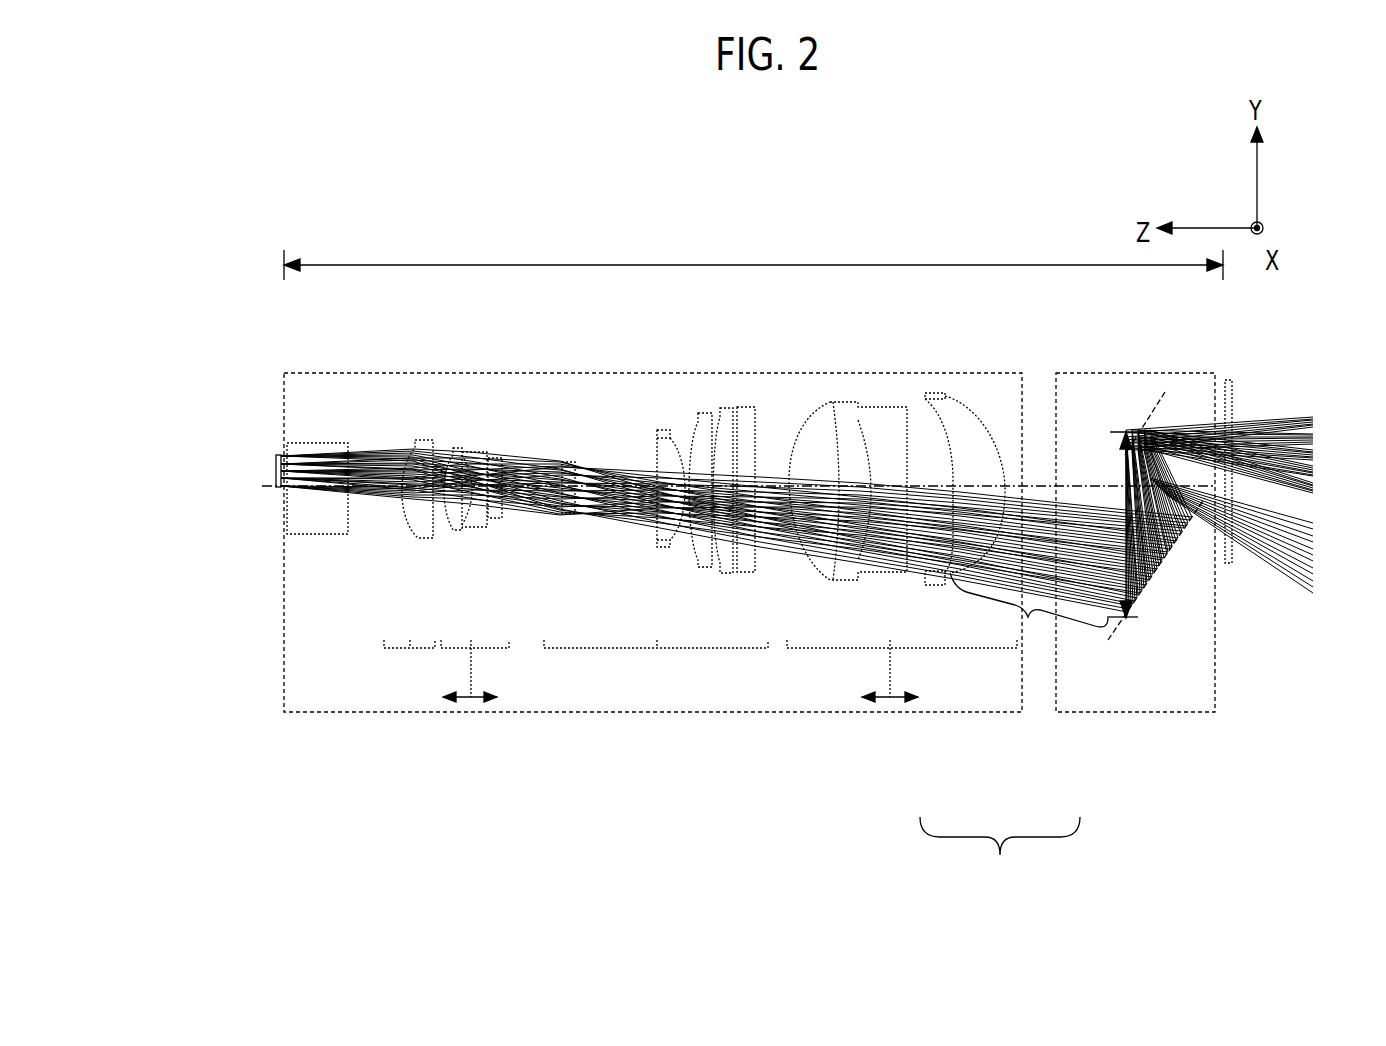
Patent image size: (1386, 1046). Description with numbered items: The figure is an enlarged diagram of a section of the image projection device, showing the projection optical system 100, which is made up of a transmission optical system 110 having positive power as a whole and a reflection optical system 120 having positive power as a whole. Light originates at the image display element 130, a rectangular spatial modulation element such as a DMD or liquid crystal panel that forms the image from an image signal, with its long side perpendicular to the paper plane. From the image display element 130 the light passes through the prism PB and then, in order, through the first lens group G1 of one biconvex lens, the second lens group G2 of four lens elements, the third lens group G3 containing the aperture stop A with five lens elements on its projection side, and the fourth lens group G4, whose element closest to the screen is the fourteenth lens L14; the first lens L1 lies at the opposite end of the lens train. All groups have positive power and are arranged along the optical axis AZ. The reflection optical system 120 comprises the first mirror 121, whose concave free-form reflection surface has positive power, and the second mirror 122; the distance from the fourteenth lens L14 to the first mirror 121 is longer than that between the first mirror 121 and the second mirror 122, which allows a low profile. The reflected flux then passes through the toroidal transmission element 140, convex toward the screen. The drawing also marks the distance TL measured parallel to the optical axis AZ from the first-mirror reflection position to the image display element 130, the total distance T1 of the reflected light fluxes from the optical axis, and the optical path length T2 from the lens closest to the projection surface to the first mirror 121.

The projection optical system 100 is at (1000, 854).
The transmission optical system 110 is at (990, 712).
The reflection optical system 120 is at (1068, 712).
The first mirror 121 is at (1153, 592).
The second mirror 122 is at (1163, 398).
The image display element 130 is at (278, 487).
The transmission element 140 is at (1233, 388).
The prism PB is at (320, 443).
The first lens L1 is at (425, 438).
The fourteenth lens L14 is at (974, 427).
The aperture stop A is at (560, 490).
The optical axis AZ is at (1020, 480).
The distance parallel to optical axis TL is at (770, 262).
The total distance of light flux from optical axis T1 is at (1124, 448).
The optical path length T2 is at (1029, 614).
The first lens group G1 is at (410, 625).
The second lens group G2 is at (475, 652).
The third lens group G3 is at (656, 625).
The fourth lens group G4 is at (902, 652).